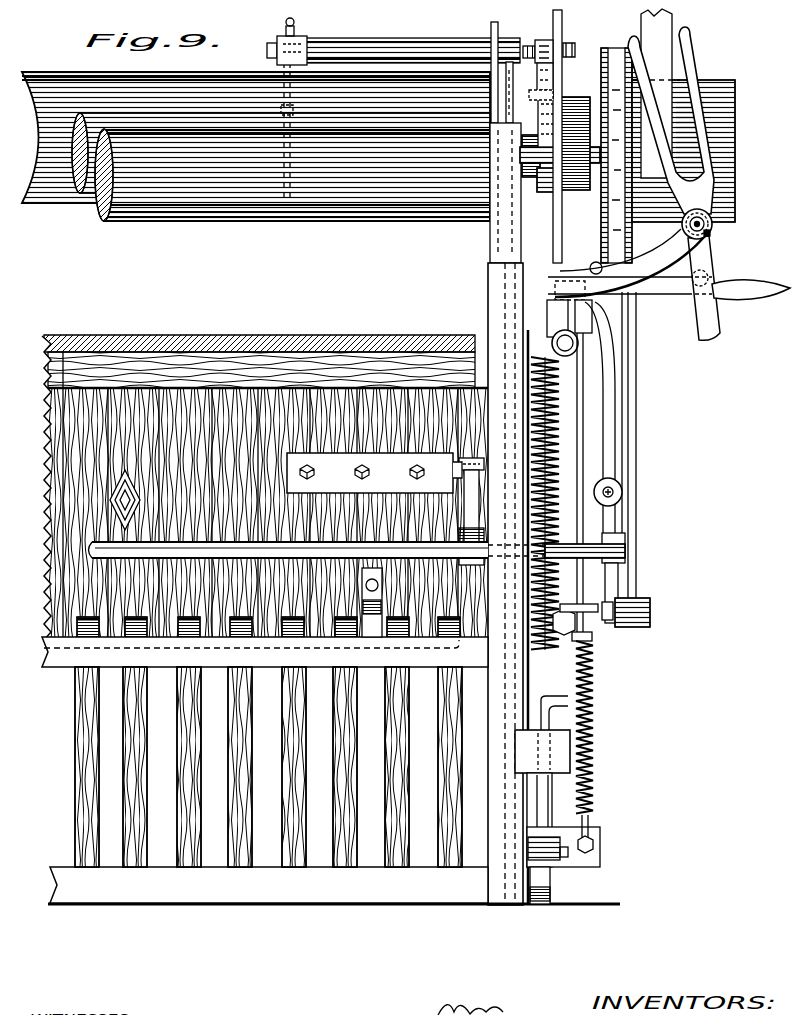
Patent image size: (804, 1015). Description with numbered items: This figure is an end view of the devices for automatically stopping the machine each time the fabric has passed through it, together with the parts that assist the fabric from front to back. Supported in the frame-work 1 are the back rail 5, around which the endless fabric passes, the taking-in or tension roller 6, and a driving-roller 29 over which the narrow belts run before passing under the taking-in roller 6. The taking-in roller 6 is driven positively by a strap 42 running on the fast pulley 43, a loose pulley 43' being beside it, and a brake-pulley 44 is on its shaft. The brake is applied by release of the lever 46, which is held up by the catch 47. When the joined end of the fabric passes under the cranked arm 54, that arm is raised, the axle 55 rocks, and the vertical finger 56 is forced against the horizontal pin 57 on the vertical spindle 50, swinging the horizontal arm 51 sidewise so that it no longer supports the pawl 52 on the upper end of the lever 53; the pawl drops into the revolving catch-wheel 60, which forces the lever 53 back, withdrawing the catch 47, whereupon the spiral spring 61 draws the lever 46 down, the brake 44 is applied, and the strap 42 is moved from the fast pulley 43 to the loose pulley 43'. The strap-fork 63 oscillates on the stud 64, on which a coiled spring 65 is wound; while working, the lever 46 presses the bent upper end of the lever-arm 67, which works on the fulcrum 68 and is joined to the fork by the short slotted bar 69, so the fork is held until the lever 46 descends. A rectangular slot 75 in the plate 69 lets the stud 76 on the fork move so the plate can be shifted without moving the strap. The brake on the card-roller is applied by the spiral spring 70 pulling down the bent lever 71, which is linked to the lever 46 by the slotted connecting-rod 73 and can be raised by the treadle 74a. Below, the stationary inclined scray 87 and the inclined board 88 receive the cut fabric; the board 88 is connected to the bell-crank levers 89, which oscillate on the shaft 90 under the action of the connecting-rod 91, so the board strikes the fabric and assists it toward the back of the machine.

The frame-work 1 is at (334, 463).
The back rail 5 is at (40, 104).
The taking-in or tension roller 6 is at (72, 150).
The driving-roller 29 is at (100, 205).
The strap 42 is at (660, 93).
The fast pulley 43 is at (687, 135).
The loose pulley 43' is at (695, 136).
The brake-pulley 44 is at (602, 206).
The lever 46 is at (556, 314).
The catch 47 is at (531, 380).
The vertical spindle 50 is at (548, 192).
The horizontal arm 51 is at (552, 95).
The pawl or catch 52 is at (546, 42).
The lever 53 is at (556, 216).
The cranked arm 54 is at (282, 186).
The axle 55 is at (268, 50).
The vertical finger 56 is at (540, 96).
The horizontal pin 57 is at (530, 135).
The revolving catch-wheel 60 is at (556, 113).
The spiral spring 61 is at (534, 432).
The strap-fork 63 is at (690, 54).
The stud 64 is at (712, 230).
The coiled spring 65 is at (708, 240).
The lever-arm 67 is at (604, 432).
The fulcrum 68 is at (623, 492).
The short slotted bar 69 is at (645, 296).
The spiral spring 70 is at (591, 674).
The bent lever 71 is at (570, 598).
The connecting-rod 73 is at (584, 407).
The treadle 74a is at (548, 886).
The rectangular slot 75 is at (673, 296).
The stud 76 is at (708, 281).
The stationary inclined scray 87 is at (280, 780).
The inclined board 88 is at (60, 476).
The bell-crank levers 89 is at (474, 503).
The fulcrum or shaft 90 is at (160, 556).
The connecting-rod 91 is at (637, 460).